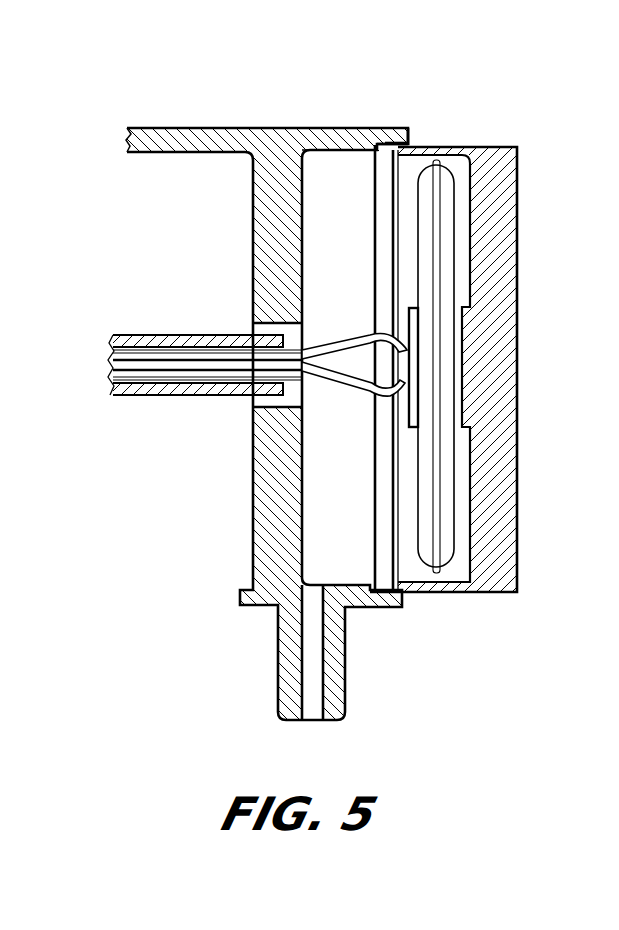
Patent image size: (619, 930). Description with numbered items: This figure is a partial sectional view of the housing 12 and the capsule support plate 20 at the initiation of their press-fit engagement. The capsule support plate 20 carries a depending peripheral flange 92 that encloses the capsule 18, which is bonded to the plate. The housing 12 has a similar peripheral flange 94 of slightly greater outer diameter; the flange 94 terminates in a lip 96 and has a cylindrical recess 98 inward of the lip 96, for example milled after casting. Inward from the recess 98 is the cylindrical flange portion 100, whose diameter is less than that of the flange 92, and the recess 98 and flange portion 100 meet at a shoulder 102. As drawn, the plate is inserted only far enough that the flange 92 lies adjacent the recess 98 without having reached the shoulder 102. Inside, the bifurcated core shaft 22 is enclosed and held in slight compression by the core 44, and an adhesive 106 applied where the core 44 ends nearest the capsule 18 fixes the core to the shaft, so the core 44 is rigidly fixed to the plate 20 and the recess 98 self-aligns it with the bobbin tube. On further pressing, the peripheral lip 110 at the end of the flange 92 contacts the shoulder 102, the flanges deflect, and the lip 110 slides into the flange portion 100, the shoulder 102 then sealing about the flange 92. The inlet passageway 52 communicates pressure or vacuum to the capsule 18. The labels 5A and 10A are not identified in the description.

The housing 12 is at (144, 128).
The peripheral flange 94 is at (338, 128).
The cylindrical flange portion 100 is at (318, 128).
The cylindrical recess 98 is at (388, 150).
The lip 96 is at (412, 133).
The peripheral lip 110 is at (440, 135).
The depending peripheral flange 92 is at (490, 340).
The capsule 18 is at (458, 182).
The capsule support plate 20 is at (493, 248).
The shoulder 102 is at (375, 172).
The core 44 is at (195, 335).
The adhesive 106 is at (273, 395).
The core shaft 22 is at (364, 402).
The contact block 10A is at (401, 427).
The body member 5A is at (278, 665).
The inlet passageway 52 is at (312, 677).